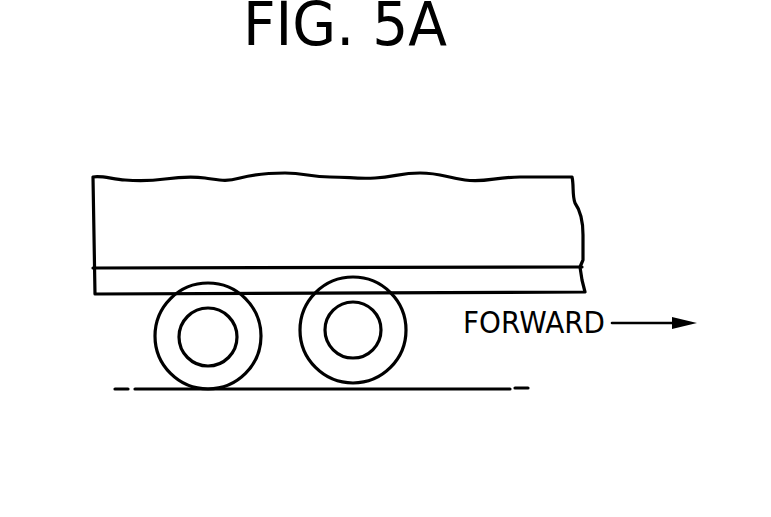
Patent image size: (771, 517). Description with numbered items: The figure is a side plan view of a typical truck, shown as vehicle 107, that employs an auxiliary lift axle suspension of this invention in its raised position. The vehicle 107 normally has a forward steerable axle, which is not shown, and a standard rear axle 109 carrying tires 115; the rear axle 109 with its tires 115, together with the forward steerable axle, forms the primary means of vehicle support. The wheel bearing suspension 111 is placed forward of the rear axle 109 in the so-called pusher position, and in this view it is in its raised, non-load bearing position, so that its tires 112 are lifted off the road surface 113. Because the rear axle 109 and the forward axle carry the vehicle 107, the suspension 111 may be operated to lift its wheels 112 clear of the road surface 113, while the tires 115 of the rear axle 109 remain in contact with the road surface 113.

The vehicle 107 is at (512, 197).
The rear axle 109 is at (157, 337).
The wheel bearing suspension 111 is at (401, 345).
The tires 112 is at (330, 363).
The road surface 113 is at (482, 389).
The tires 115 is at (203, 378).